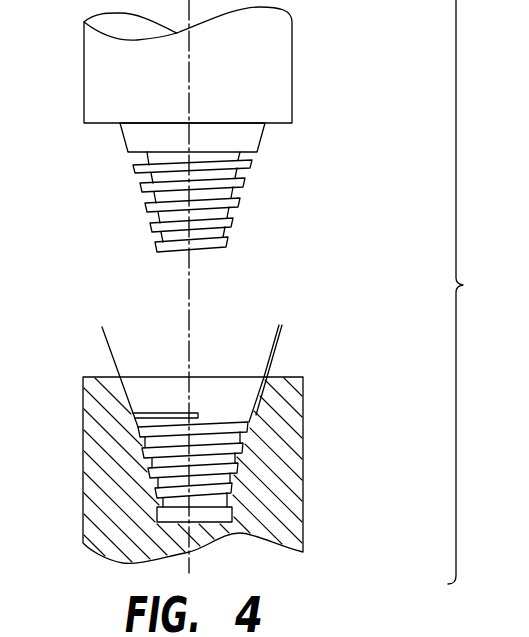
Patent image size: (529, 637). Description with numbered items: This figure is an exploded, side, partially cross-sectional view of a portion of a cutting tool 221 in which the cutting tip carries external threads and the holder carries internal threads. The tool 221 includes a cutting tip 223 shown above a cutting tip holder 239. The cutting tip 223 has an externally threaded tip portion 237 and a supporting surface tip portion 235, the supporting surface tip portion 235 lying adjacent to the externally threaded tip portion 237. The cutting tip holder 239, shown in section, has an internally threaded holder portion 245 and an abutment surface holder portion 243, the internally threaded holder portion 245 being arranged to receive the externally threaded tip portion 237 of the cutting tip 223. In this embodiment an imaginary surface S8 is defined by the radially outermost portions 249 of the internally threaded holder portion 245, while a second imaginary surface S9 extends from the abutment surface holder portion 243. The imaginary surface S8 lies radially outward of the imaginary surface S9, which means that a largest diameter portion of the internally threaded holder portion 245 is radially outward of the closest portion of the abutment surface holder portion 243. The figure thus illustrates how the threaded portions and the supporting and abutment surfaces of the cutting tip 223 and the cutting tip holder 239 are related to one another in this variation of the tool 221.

The tool 221 is at (475, 292).
The cutting tip 223 is at (310, 43).
The supporting surface tip portion 235 is at (235, 134).
The externally threaded tip portion 237 is at (217, 186).
The cutting tip holder 239 is at (340, 536).
The abutment surface holder portion 243 is at (235, 394).
The internally threaded holder portion 245 is at (195, 459).
The radially outermost portions 249 is at (238, 487).
The imaginary surface S8 is at (278, 341).
The imaginary surface S9 is at (267, 352).